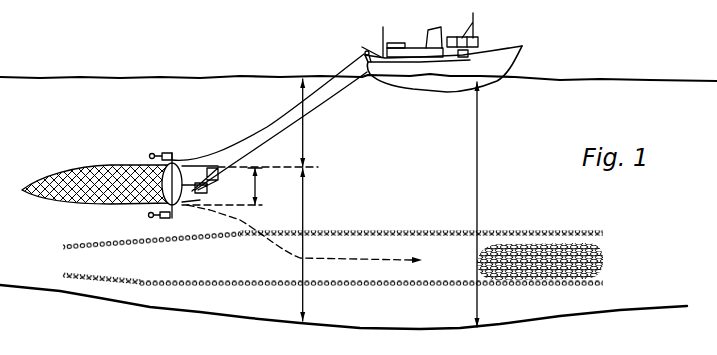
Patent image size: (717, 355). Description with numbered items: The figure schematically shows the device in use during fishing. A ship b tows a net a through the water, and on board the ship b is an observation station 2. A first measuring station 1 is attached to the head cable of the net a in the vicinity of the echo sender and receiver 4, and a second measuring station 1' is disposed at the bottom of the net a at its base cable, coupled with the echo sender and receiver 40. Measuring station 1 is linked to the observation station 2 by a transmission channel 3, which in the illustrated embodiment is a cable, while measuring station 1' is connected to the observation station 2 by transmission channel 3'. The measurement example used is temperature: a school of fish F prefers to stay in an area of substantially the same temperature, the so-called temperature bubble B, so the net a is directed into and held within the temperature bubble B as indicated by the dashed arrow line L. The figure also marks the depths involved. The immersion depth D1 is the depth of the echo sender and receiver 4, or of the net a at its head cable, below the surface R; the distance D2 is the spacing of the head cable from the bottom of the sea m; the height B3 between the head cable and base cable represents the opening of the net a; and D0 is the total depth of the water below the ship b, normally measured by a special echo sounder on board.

The towed net a is at (88, 164).
The measuring station 1 is at (151, 146).
The echo sender and receiver 4 is at (168, 152).
The second measuring station 1' is at (142, 223).
The echo sender and receiver 40 is at (173, 219).
The transmission channel 3 is at (268, 107).
The transmission channel 3' is at (281, 131).
The observation station 2 is at (470, 50).
The ship b is at (393, 44).
The water surface R is at (237, 77).
The dashed arrow line L is at (352, 226).
The temperature bubble B is at (448, 268).
The school of fish F is at (523, 275).
The bottom of the sea m is at (605, 313).
The total depth of the water D0 is at (468, 204).
The immersion depth D1 is at (302, 95).
The distance of the head cable from the bottom D2 is at (294, 244).
The net mouth opening height B3 is at (252, 186).